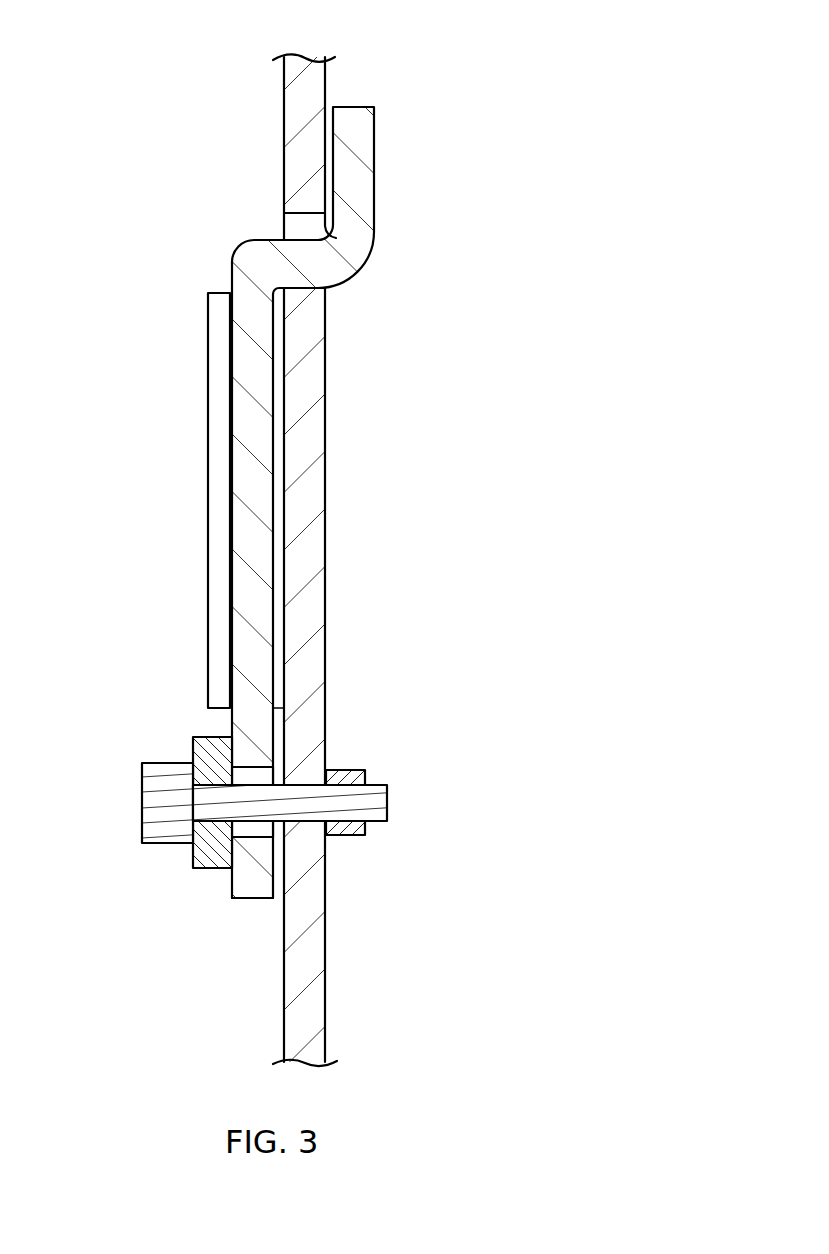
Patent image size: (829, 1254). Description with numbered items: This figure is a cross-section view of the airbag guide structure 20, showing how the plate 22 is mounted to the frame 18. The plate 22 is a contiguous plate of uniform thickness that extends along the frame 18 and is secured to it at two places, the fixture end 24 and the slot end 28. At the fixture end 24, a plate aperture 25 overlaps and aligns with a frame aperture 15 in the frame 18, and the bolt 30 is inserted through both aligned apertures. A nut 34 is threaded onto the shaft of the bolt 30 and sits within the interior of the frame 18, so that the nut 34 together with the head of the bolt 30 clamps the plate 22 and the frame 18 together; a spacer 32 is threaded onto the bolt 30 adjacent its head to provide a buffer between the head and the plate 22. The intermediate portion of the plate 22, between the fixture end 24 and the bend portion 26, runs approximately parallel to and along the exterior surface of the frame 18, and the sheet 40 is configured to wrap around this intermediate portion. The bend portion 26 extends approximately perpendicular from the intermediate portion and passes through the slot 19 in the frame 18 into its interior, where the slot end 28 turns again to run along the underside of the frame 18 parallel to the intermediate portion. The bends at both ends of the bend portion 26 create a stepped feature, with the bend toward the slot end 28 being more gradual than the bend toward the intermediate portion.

The frame aperture 15 is at (303, 822).
The frame 18 is at (322, 603).
The slot 19 is at (303, 207).
The airbag guide structure 20 is at (414, 538).
The plate 22 is at (230, 647).
The fixture end 24 is at (232, 898).
The plate aperture 25 is at (263, 833).
The bend portion 26 is at (332, 280).
The slot end 28 is at (357, 107).
The bolt 30 is at (226, 851).
The spacer 32 is at (193, 870).
The nut 34 is at (350, 771).
The sheet 40 is at (207, 537).